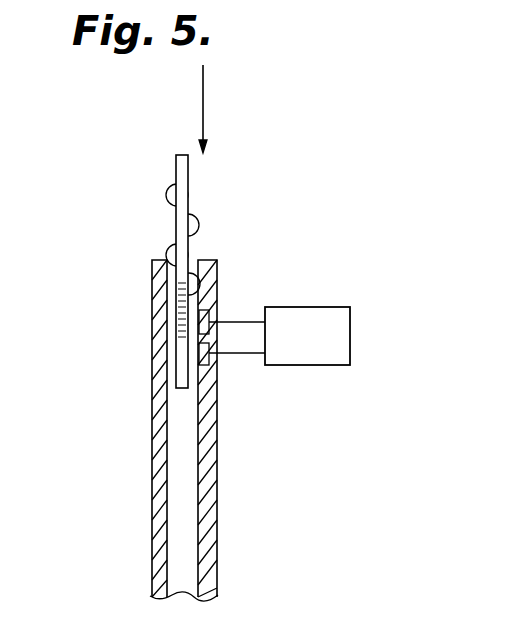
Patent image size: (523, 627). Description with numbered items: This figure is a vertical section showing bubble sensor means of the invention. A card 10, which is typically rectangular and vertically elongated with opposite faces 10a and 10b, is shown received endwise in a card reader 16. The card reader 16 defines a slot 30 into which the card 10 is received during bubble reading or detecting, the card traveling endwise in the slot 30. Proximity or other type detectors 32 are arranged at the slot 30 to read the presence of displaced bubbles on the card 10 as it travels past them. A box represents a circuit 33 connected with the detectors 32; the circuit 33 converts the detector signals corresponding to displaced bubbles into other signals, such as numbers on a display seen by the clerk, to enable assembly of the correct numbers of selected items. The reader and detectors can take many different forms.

The card 10 is at (161, 259).
The face of the card 10a is at (190, 175).
The face of the card 10b is at (176, 168).
The card reader 16 is at (176, 398).
The slot 30 is at (184, 476).
The detectors 32 is at (206, 311).
The circuit 33 is at (311, 349).